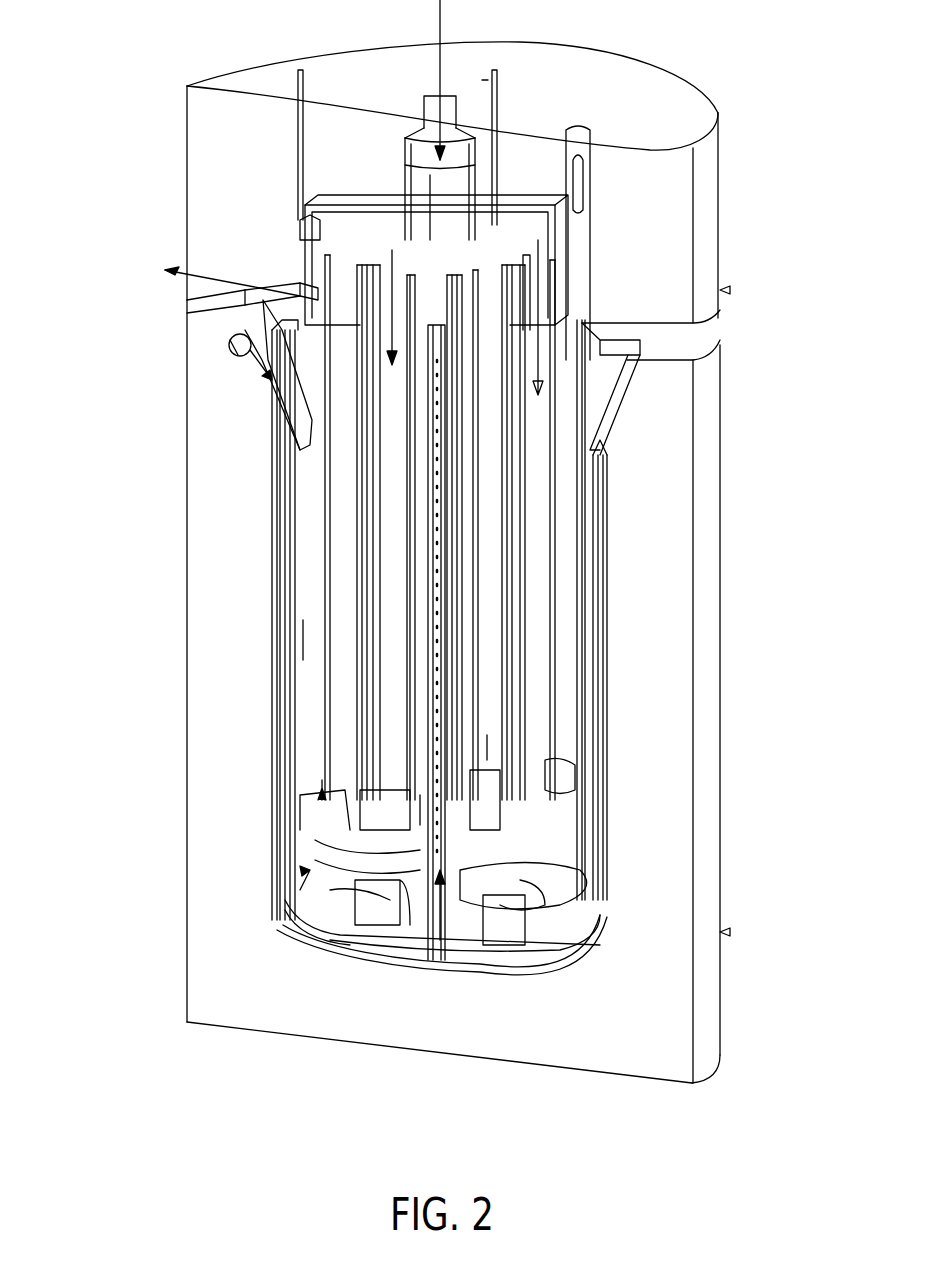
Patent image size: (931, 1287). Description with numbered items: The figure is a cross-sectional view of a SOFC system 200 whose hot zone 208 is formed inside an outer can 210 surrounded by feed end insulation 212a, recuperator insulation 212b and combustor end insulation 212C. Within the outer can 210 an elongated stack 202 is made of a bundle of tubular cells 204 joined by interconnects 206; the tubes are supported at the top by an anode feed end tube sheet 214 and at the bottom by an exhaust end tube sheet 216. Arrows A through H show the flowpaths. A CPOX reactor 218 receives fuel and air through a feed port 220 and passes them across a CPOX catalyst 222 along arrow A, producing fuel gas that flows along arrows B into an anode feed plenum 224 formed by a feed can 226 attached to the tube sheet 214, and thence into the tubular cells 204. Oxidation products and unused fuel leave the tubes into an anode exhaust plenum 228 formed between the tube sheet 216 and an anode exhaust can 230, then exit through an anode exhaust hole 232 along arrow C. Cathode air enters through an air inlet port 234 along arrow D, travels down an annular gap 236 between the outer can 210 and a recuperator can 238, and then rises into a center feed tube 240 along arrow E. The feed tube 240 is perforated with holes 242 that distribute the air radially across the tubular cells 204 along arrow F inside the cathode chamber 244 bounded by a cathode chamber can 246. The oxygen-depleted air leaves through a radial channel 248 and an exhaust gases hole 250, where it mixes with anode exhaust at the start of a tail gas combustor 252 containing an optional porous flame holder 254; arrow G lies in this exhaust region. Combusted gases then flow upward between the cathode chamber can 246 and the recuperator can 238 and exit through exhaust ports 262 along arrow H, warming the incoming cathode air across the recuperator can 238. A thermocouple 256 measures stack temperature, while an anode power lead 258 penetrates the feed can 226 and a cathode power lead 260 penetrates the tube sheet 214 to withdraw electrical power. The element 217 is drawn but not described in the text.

The SOFC system 200 is at (300, 1076).
The elongated stack 202 is at (566, 559).
The tubular cells 204 is at (346, 596).
The interconnects 206 is at (546, 273).
The hot zone 208 is at (584, 906).
The outer can 210 is at (279, 381).
The feed end insulation 212a is at (662, 176).
The recuperator insulation 212b is at (672, 656).
The combustor end insulation 212C is at (670, 1033).
The anode feed end tube sheet 214 is at (291, 296).
The exhaust end tube sheet 216 is at (566, 776).
The baffle 217 is at (376, 841).
The CPOX reactor 218 is at (421, 130).
The feed port 220 is at (482, 58).
The CPOX catalyst 222 is at (440, 196).
The anode feed plenum 224 is at (343, 236).
The feed can 226 is at (306, 218).
The anode exhaust plenum 228 is at (542, 866).
The anode exhaust can 230 is at (348, 829).
The anode exhaust hole 232 is at (416, 846).
The air inlet port 234 is at (238, 346).
The annular gap 236 is at (286, 698).
The recuperator can 238 is at (283, 334).
The center feed tube 240 is at (438, 678).
The holes 242 is at (436, 531).
The cathode chamber 244 is at (566, 651).
The cathode chamber can 246 is at (311, 448).
The radial channel 248 is at (536, 893).
The exhaust gases hole 250 is at (401, 896).
The tail gas combustor 252 is at (508, 938).
The porous flame holder 254 is at (374, 911).
The thermocouple 256 is at (578, 208).
The anode power lead 258 is at (498, 101).
The cathode power lead 260 is at (297, 86).
The exhaust ports 262 is at (624, 342).
The arrow A is at (438, 27).
The arrows B is at (426, 216).
The arrow C is at (488, 741).
The arrow D is at (266, 383).
The arrow E is at (421, 941).
The arrow F is at (304, 624).
The arrow G is at (311, 896).
The arrow H is at (176, 270).